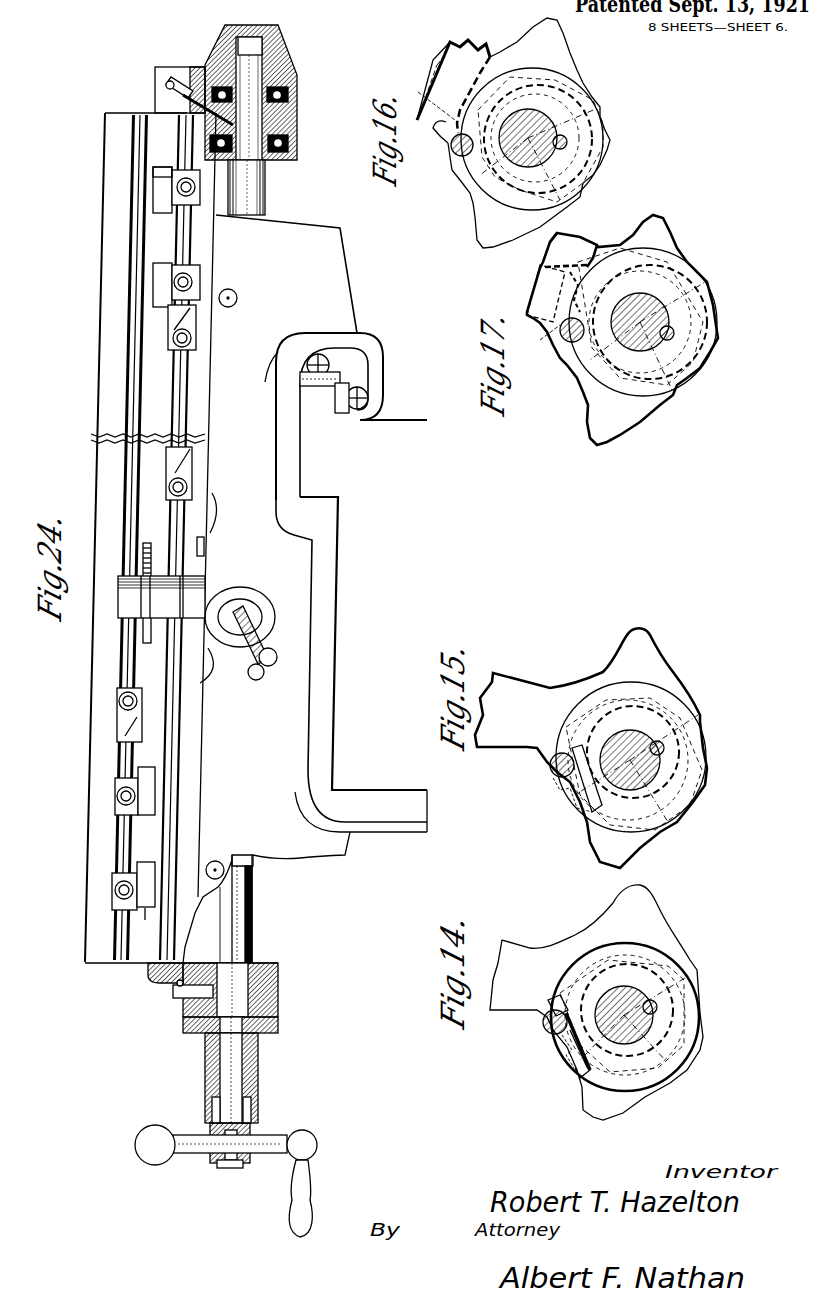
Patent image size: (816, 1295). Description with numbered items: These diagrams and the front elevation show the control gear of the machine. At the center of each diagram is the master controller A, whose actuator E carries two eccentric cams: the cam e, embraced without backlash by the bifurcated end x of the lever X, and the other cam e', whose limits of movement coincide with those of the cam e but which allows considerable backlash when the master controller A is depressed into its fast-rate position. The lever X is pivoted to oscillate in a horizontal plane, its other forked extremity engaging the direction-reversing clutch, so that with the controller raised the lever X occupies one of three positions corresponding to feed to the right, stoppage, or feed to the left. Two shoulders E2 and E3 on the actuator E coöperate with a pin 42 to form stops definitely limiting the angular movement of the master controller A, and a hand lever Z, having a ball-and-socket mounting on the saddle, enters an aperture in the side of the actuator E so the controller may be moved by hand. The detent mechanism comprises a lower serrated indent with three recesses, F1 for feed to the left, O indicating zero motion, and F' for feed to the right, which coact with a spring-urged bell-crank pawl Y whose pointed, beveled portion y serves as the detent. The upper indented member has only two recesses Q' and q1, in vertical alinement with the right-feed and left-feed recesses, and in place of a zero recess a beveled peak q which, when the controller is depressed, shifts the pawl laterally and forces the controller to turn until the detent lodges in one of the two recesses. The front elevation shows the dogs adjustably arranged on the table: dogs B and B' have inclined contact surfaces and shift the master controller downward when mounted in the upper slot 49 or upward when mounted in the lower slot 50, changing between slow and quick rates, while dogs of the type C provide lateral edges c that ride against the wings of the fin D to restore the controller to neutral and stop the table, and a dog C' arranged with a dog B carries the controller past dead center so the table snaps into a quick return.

In FIG. 24, the upper slot 49 is at (131, 365).
In FIG. 24, the lower slot 50 is at (180, 378).
In FIG. 24, the master controller A is at (161, 597).
In FIG. 24, the dog B is at (145, 560).
In FIG. 24, the dog B' is at (170, 473).
In FIG. 24, the dog C is at (146, 538).
In FIG. 24, the dog C' is at (158, 285).
In FIG. 24, the lateral edge c is at (160, 172).
In FIG. 17, the lateral edge c is at (637, 347).
In FIG. 24, the vane or fin D is at (151, 540).
In FIG. 24, the hand lever Z is at (272, 650).
In FIG. 14, the clutch-shifting lever X is at (516, 940).
In FIG. 15, the clutch-shifting lever X is at (509, 680).
In FIG. 16, the clutch-shifting lever X is at (521, 133).
In FIG. 17, the clutch-shifting lever X is at (560, 368).
In FIG. 14, the actuator E is at (655, 1088).
In FIG. 14, the shoulder E2 is at (552, 1003).
In FIG. 14, the shoulder E3 is at (575, 1072).
In FIG. 14, the cam e is at (624, 987).
In FIG. 15, the cam e is at (630, 731).
In FIG. 16, the cam e is at (536, 129).
In FIG. 17, the cam e is at (640, 322).
In FIG. 14, the cam e' is at (641, 1015).
In FIG. 15, the cam e' is at (648, 764).
In FIG. 16, the cam e' is at (551, 139).
In FIG. 17, the cam e' is at (647, 321).
In FIG. 14, the bifurcated end x is at (645, 975).
In FIG. 15, the bifurcated end x is at (650, 722).
In FIG. 16, the bifurcated end x is at (546, 95).
In FIG. 17, the bifurcated end x is at (655, 296).
In FIG. 14, the pin 42 is at (544, 1025).
In FIG. 15, the pin 42 is at (551, 770).
In FIG. 15, the left-feed recess F1 is at (570, 750).
In FIG. 16, the left-feed recess F1 is at (490, 55).
In FIG. 15, the right-feed recess F' is at (562, 801).
In FIG. 16, the right-feed recess F' is at (449, 155).
In FIG. 16, the pawl Y is at (448, 60).
In FIG. 17, the pawl Y is at (568, 240).
In FIG. 16, the zero recess O is at (432, 82).
In FIG. 16, the pointed portion y is at (428, 101).
In FIG. 17, the pointed portion y is at (543, 339).
In FIG. 17, the detent or peak q is at (562, 262).
In FIG. 17, the recess q1 is at (598, 262).
In FIG. 17, the recess Q' is at (541, 293).